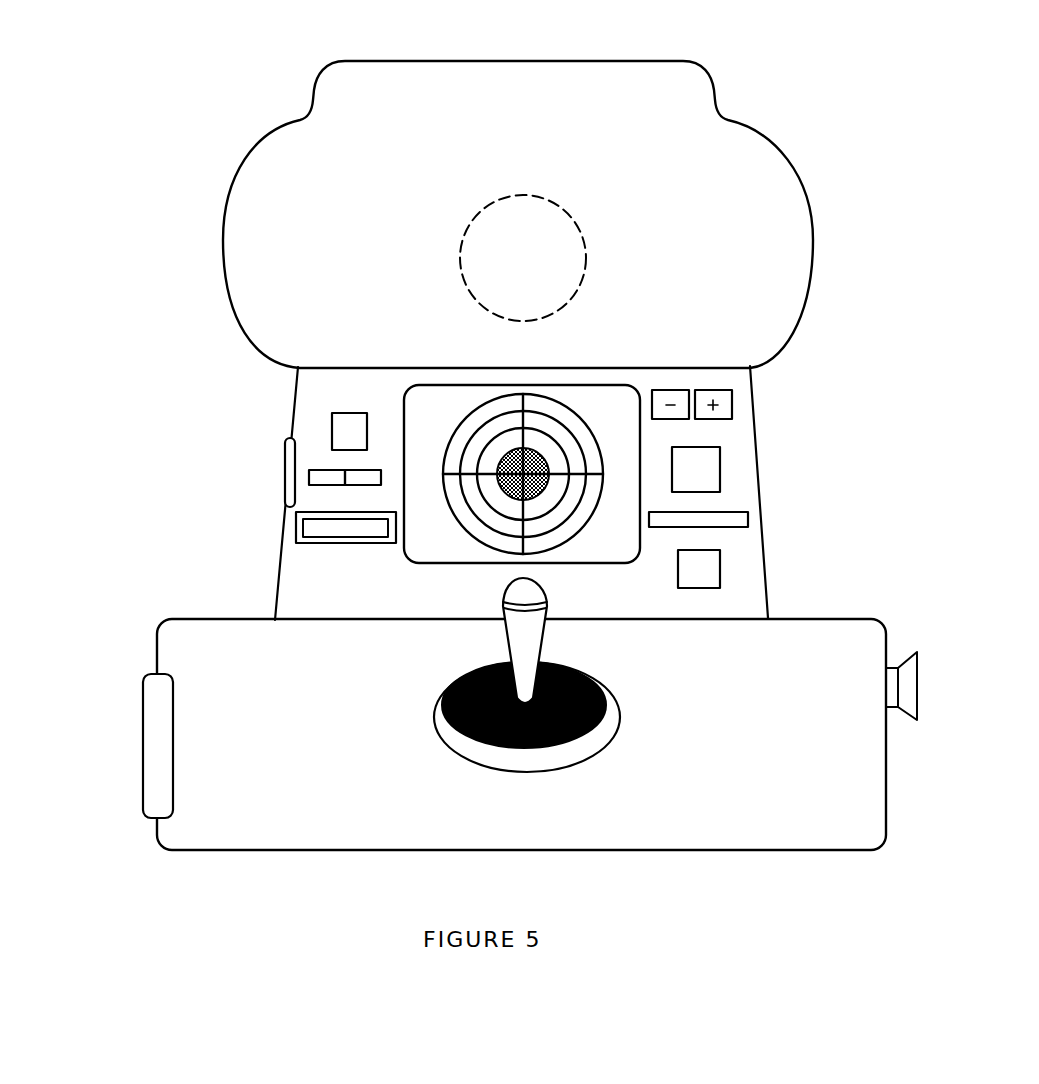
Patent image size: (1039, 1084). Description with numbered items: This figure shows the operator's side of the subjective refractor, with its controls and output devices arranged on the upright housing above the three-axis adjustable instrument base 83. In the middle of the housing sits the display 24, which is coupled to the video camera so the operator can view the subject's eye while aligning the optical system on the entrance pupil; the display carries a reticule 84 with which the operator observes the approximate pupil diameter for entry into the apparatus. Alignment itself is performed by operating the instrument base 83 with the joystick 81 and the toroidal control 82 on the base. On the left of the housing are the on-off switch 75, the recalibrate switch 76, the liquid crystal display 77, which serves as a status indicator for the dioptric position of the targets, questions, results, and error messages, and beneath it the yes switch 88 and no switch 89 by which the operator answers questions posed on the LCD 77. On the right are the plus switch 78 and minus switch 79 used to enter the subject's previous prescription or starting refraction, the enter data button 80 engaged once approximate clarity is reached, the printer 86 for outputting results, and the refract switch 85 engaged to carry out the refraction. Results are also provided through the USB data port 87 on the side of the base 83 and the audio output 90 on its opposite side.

The display 24 is at (607, 563).
The on-off switch 75 is at (288, 473).
The recalibrate switch 76 is at (332, 425).
The liquid crystal display 77 is at (293, 523).
The plus switch 78 is at (728, 390).
The minus switch 79 is at (672, 419).
The enter data button 80 is at (720, 465).
The joystick 81 is at (530, 642).
The toroidal control 82 is at (490, 753).
The 3-axis adjustable instrument base 83 is at (675, 822).
The reticule 84 is at (563, 403).
The refract switch 85 is at (720, 570).
The printer 86 is at (748, 517).
The USB data port 87 is at (158, 745).
The yes switch 88 is at (328, 485).
The no switch 89 is at (360, 485).
The audio output 90 is at (919, 668).